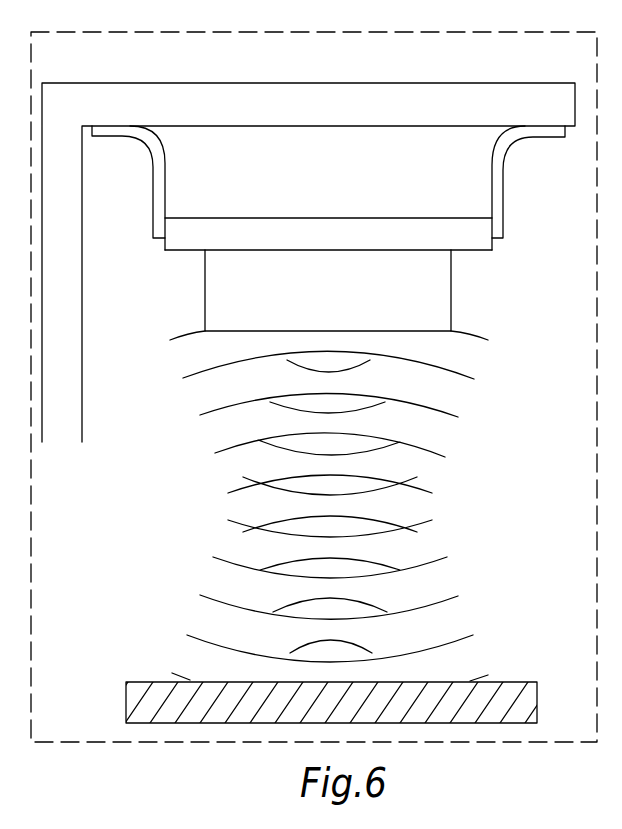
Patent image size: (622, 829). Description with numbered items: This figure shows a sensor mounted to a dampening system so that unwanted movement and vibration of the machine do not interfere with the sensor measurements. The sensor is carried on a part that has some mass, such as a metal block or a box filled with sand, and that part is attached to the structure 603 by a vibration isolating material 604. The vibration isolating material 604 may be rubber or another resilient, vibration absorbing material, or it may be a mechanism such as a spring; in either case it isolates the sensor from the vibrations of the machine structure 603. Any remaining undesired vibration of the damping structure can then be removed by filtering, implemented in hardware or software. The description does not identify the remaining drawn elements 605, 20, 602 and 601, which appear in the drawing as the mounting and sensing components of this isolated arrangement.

The structure 603 is at (575, 82).
The mounting bracket 605 is at (493, 165).
The vibration isolating material 604 is at (358, 217).
The ultrasonic transducer 20 is at (451, 295).
The acoustic waves 602 is at (458, 417).
The substrate 601 is at (473, 635).